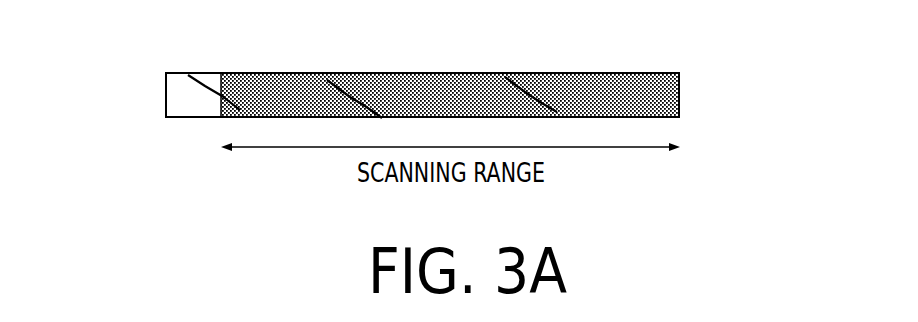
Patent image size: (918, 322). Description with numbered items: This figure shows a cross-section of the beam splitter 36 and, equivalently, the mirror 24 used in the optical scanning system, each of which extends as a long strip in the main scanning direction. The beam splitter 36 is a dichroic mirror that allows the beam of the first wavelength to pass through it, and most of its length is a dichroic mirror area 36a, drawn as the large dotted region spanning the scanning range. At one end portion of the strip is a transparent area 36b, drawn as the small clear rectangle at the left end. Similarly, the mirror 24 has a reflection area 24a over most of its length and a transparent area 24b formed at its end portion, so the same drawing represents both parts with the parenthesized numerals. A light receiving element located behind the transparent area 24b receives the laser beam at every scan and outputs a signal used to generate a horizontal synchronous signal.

The beam splitter 36 is at (537, 62).
The mirror 24 is at (434, 78).
The dichroic mirror area 36a is at (673, 96).
The reflection area 24a is at (742, 95).
The transparent area 36b is at (183, 108).
The transparent area 24b is at (132, 110).